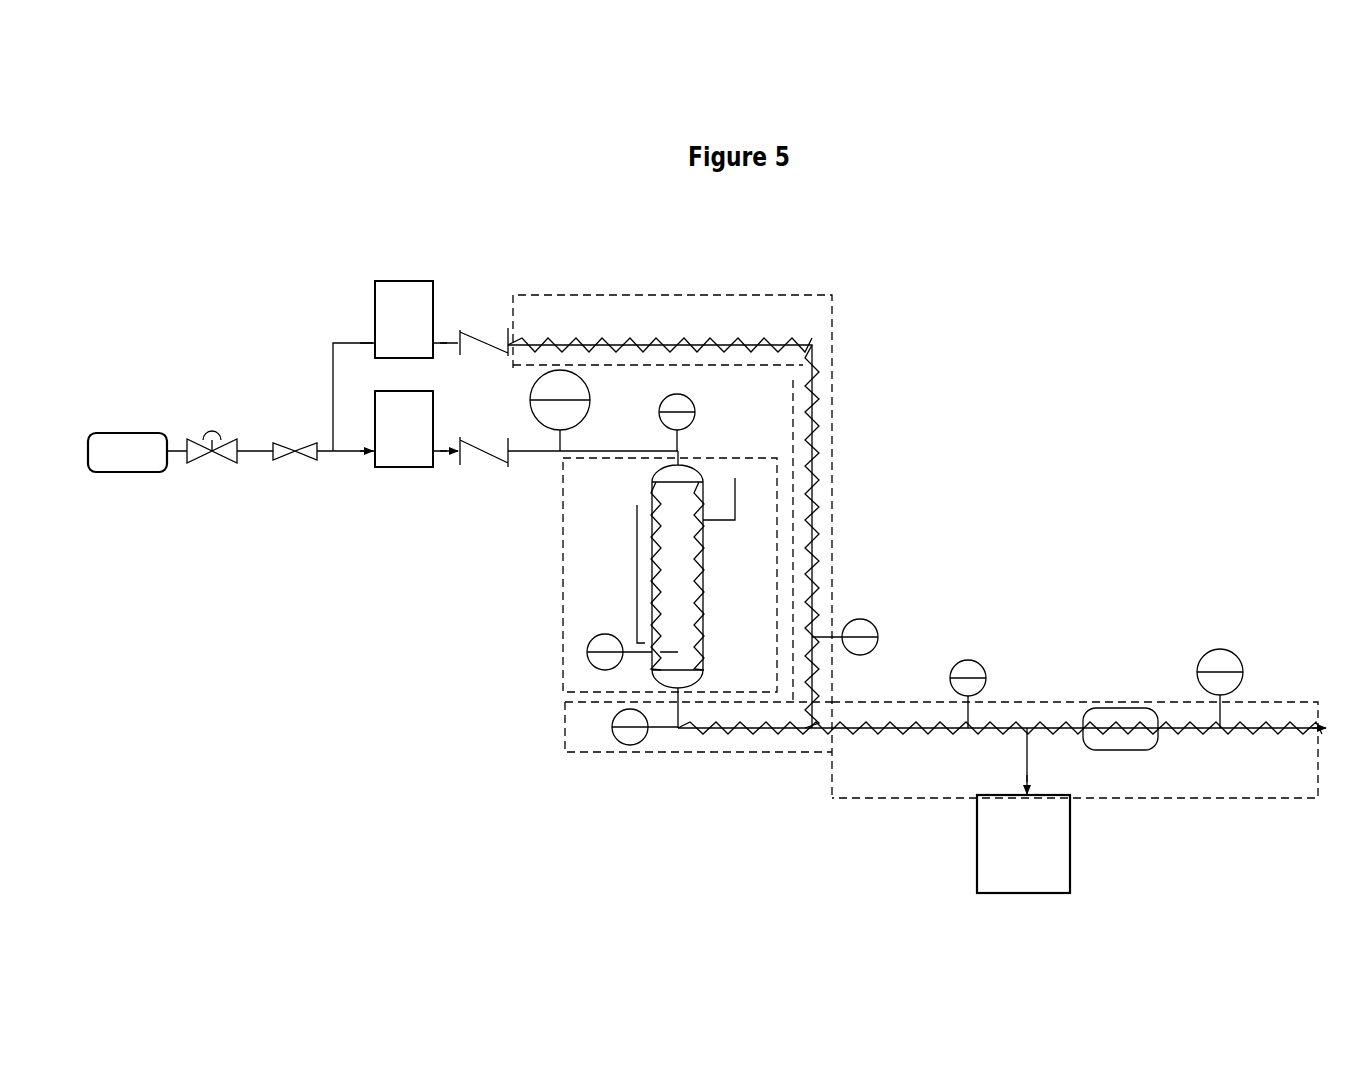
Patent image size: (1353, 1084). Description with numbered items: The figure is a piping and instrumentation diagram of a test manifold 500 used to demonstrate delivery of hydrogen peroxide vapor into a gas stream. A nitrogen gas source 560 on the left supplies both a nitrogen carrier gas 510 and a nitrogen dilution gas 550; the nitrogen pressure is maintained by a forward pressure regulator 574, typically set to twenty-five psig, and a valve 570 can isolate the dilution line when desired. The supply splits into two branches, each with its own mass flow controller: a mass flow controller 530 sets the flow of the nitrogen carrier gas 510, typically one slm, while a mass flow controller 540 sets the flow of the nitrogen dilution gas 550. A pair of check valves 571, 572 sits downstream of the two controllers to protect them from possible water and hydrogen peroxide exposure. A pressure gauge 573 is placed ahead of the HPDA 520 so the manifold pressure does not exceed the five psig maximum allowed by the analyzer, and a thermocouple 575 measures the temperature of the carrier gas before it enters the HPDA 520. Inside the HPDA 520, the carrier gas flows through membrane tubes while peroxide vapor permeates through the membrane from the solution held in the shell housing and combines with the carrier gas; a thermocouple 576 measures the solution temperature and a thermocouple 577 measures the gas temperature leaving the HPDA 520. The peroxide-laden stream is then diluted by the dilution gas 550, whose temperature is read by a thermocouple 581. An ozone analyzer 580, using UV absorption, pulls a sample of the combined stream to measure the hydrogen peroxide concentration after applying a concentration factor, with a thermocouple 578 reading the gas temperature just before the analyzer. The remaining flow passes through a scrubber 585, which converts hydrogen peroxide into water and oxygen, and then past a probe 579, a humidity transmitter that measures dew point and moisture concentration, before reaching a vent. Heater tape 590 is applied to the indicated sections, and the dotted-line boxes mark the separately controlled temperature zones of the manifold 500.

The test manifold 500 is at (1048, 388).
The nitrogen carrier gas 510 is at (545, 452).
The HPDA 520 is at (657, 582).
The mass flow controller 530 is at (388, 468).
The mass flow controller 540 is at (393, 280).
The nitrogen dilution gas 550 is at (583, 372).
The nitrogen gas source 560 is at (143, 432).
The valve 570 is at (817, 672).
The check valve 571 is at (488, 332).
The check valve 572 is at (485, 471).
The pressure gauge 573 is at (610, 340).
The forward pressure regulator 574 is at (213, 468).
The thermocouple 575 is at (695, 412).
The thermocouple 576 is at (590, 655).
The thermocouple 577 is at (625, 745).
The thermocouple 578 is at (972, 660).
The probe 579 is at (1217, 649).
The ozone analyzer 580 is at (1070, 838).
The thermocouple 581 is at (862, 619).
The scrubber 585 is at (1138, 708).
The heater tape 590 is at (770, 340).